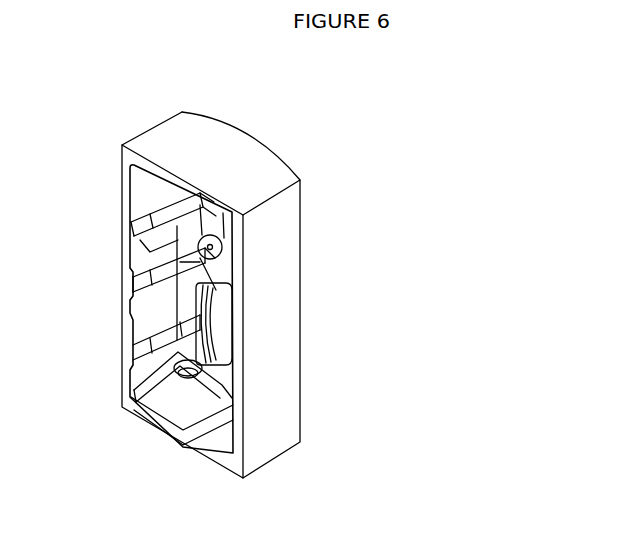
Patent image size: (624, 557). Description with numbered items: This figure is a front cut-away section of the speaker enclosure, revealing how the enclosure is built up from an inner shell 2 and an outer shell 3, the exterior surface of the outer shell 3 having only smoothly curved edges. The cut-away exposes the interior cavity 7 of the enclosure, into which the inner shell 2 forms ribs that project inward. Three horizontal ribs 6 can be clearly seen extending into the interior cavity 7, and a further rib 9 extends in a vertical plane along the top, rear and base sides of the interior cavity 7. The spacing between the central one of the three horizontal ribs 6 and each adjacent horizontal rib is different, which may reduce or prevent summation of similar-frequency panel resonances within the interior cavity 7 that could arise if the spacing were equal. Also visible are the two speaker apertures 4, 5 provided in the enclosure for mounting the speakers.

The inner shell 2 is at (153, 199).
The outer shell 3 is at (210, 174).
The speaker aperture 4 is at (231, 306).
The speaker aperture 5 is at (231, 229).
The horizontal ribs 6 is at (142, 230).
The interior cavity 7 is at (88, 381).
The rib 9 is at (174, 169).